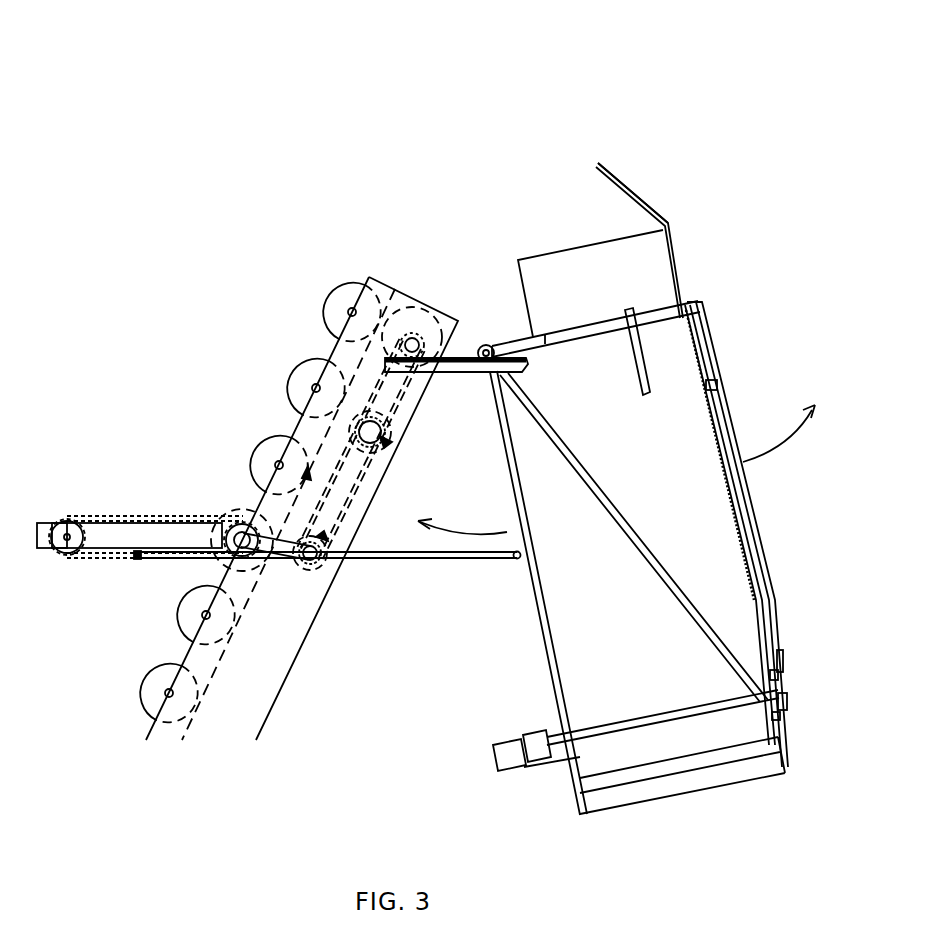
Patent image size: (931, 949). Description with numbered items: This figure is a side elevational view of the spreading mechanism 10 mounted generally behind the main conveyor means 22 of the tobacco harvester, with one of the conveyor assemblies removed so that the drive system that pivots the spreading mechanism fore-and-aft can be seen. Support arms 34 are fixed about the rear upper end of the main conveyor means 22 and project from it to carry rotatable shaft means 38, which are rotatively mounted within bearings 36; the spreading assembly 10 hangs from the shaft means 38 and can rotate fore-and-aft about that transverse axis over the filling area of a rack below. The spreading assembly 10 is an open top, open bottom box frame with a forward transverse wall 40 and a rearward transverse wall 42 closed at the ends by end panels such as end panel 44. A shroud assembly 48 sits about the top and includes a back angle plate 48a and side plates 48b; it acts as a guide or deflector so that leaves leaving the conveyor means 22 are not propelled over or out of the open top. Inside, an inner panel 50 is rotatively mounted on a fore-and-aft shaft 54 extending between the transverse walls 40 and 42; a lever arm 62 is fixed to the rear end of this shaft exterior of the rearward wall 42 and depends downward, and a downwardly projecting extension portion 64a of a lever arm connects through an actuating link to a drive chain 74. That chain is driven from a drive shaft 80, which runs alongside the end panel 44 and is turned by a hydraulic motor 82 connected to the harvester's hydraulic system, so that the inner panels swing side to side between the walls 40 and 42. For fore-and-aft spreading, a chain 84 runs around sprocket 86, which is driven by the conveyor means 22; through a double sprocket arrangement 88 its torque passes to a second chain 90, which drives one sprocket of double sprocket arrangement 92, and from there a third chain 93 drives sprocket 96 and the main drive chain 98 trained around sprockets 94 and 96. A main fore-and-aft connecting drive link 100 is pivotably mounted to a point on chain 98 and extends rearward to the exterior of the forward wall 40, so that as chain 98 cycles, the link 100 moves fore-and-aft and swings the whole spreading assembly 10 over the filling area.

The spreading mechanism 10 is at (506, 116).
The main conveyor means 22 is at (266, 652).
The support arm 34 is at (456, 348).
The bearing 36 is at (523, 318).
The shaft means 38 is at (496, 378).
The forward transverse wall 40 is at (547, 660).
The rearward transverse wall 42 is at (757, 578).
The end panel 44 is at (597, 755).
The shroud assembly 48 is at (702, 250).
The back angle plate 48a is at (645, 197).
The side plate 48b is at (632, 275).
The inner panel 50 is at (680, 492).
The shaft 54 is at (662, 322).
The lever arm 62 is at (720, 370).
The extension portion 64a is at (762, 548).
The drive chain 74 is at (787, 707).
The drive shaft 80 is at (672, 715).
The hydraulic motor 82 is at (495, 750).
The chain 84 is at (408, 390).
The sprocket 86 is at (419, 338).
The double sprocket arrangement 88 is at (377, 443).
The second chain 90 is at (355, 488).
The double sprocket arrangement 92 is at (337, 556).
The third chain 93 is at (280, 562).
The sprocket 94 is at (88, 484).
The sprocket 96 is at (229, 484).
The main drive chain 98 is at (160, 484).
The main fore-and-aft connecting drive link 100 is at (428, 558).